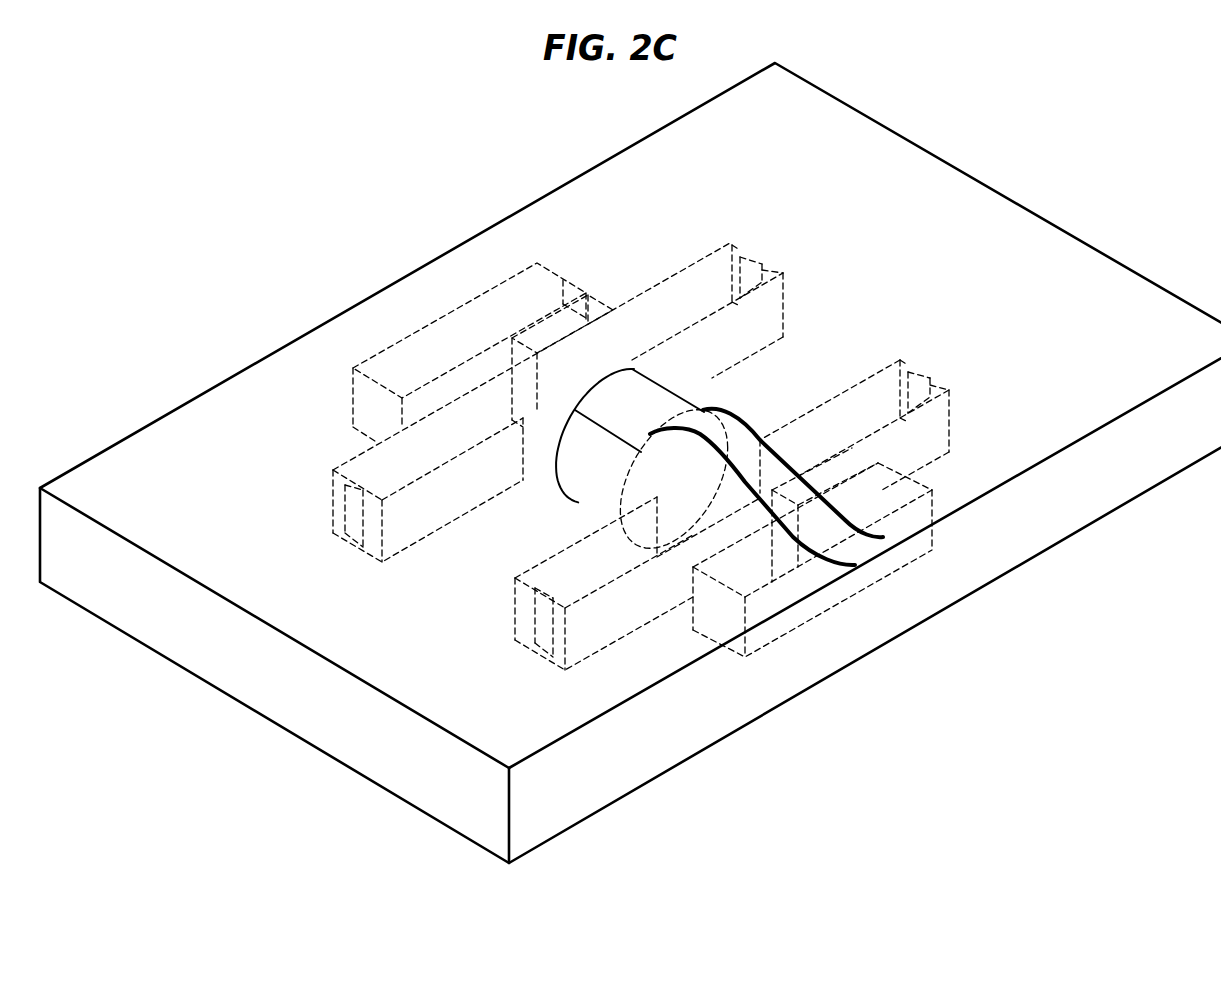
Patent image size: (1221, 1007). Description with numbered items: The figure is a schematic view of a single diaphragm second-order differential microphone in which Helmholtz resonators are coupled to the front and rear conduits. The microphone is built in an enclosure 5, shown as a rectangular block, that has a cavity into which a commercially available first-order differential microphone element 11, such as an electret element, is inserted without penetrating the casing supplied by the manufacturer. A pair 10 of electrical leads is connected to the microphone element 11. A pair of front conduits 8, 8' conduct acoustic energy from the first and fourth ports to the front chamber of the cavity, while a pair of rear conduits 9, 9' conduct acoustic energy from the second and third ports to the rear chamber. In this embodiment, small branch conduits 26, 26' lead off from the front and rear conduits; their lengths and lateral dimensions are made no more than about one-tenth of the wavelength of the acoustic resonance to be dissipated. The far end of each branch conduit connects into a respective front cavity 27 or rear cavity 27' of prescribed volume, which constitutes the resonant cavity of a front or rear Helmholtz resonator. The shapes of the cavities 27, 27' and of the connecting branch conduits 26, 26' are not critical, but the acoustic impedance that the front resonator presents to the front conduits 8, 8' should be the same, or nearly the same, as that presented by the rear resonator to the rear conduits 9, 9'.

The enclosure 5 is at (583, 777).
The front conduit 8 is at (518, 402).
The front conduit 8' is at (707, 292).
The rear conduit 9 is at (637, 583).
The rear conduit 9' is at (854, 415).
The pair of electrical leads 10 is at (856, 563).
The microphone element 11 is at (618, 400).
The branch conduit 26 is at (562, 327).
The branch conduit 26' is at (802, 517).
The front cavity 27 is at (469, 346).
The rear cavity 27' is at (839, 560).